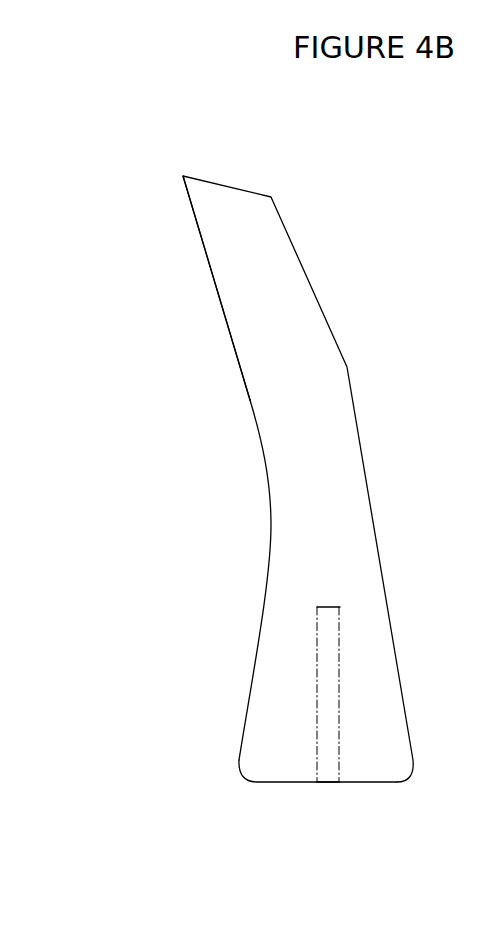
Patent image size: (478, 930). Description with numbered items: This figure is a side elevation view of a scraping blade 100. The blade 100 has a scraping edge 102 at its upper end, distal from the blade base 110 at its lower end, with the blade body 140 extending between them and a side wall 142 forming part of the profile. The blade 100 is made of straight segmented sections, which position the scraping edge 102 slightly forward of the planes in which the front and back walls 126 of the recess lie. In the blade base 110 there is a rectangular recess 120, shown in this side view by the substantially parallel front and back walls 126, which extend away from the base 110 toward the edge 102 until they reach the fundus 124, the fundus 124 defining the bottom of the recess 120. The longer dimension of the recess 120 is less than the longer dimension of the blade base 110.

The blade 100 is at (120, 110).
The scraping edge 102 is at (181, 177).
The blade body 140 is at (262, 390).
The side wall 142 is at (293, 478).
The fundus 124 is at (328, 608).
The front and back walls 126 is at (317, 693).
The blade base 110 is at (290, 782).
The rectangular recess 120 is at (328, 782).